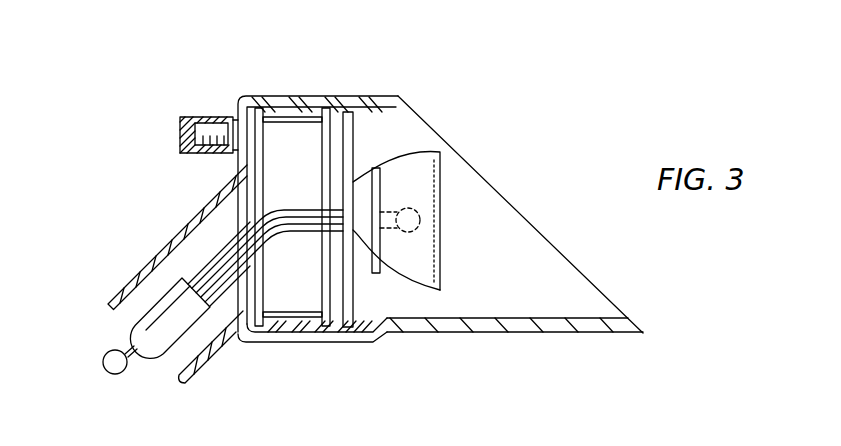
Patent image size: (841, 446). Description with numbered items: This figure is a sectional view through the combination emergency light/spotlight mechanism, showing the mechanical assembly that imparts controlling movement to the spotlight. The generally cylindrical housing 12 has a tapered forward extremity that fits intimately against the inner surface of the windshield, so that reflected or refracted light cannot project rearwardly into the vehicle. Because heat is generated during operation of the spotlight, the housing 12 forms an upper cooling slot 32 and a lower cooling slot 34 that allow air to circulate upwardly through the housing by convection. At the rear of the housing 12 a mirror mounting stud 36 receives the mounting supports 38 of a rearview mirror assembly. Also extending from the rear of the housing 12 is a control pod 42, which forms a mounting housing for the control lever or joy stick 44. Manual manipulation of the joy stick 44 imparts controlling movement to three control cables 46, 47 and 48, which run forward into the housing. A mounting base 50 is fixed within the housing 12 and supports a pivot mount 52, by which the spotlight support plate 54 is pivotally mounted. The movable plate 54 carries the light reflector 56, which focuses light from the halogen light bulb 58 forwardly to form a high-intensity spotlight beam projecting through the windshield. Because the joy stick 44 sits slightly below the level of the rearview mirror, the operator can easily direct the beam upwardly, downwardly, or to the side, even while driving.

The housing 12 is at (543, 333).
The upper cooling slot 32 is at (310, 99).
The lower cooling slot 34 is at (343, 343).
The mirror mounting stud 36 is at (210, 130).
The mounting supports 38 is at (180, 127).
The control pod 42 is at (135, 280).
The joy stick 44 is at (107, 352).
The control cable 46 is at (232, 240).
The control cable 47 is at (213, 260).
The control cable 48 is at (217, 293).
The mounting base 50 is at (355, 138).
The pivot mount 52 is at (369, 333).
The spotlight support plate 54 is at (380, 168).
The light reflector 56 is at (428, 290).
The halogen light bulb 58 is at (420, 217).